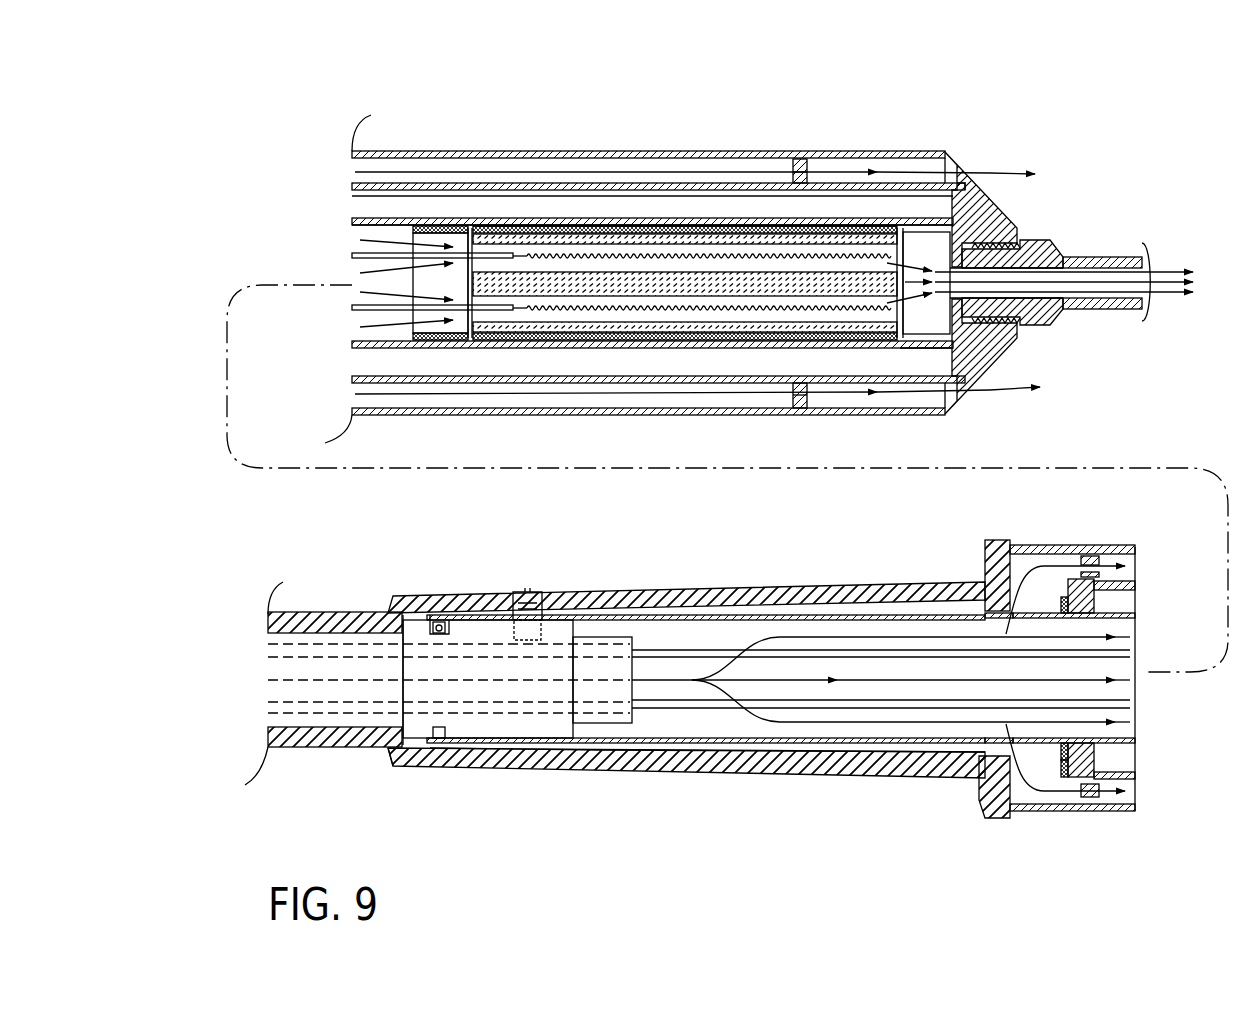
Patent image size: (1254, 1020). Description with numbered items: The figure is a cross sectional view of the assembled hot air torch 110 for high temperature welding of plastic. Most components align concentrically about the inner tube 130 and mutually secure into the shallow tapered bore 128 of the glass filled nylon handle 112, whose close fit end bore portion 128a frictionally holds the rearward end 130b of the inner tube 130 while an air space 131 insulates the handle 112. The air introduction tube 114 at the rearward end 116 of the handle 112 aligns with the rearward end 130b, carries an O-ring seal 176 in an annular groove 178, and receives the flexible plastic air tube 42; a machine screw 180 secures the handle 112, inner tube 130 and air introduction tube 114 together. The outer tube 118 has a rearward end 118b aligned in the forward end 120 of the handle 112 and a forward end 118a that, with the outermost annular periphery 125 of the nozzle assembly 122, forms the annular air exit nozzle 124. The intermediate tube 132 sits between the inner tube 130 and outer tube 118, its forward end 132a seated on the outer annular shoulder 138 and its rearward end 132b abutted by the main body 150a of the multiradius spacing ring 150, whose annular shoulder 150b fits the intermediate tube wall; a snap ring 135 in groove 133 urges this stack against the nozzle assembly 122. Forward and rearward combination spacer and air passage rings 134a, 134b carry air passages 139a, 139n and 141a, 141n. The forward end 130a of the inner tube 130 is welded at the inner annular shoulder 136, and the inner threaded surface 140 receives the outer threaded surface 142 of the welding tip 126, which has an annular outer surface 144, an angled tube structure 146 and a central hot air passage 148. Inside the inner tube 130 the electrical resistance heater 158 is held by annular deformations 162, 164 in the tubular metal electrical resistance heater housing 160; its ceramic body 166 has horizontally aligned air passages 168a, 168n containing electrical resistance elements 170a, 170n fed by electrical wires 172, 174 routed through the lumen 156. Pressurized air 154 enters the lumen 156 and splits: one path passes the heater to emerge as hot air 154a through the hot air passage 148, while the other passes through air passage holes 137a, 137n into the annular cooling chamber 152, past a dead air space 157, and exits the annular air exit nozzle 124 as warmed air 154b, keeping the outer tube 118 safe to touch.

The torch 110 is at (284, 92).
The flexible plastic air tube 42 is at (332, 610).
The handle 112 is at (815, 782).
The air introduction tube 114 is at (523, 727).
The rearward end 116 is at (422, 763).
The outer tube 118 is at (561, 148).
The forward end 118a is at (931, 153).
The rearward end 118b is at (1068, 545).
The forward end 120 is at (1015, 818).
The nozzle assembly 122 is at (1027, 128).
The annular air exit nozzle 124 is at (978, 165).
The outermost annular periphery 125 is at (1003, 198).
The welding tip 126 is at (1107, 250).
The tapered bore 128 is at (875, 748).
The close fit end bore portion 128a is at (443, 748).
The inner tube 130 is at (644, 343).
The forward end 130a is at (935, 345).
The rearward end 130b is at (449, 745).
The air space 131 is at (848, 748).
The intermediate tube 132 is at (398, 186).
The forward end 132a is at (943, 186).
The rearward end 132b is at (1133, 585).
The groove 133 is at (1072, 616).
The forward combination spacer and air passage ring 134a is at (801, 165).
The rearward combination spacer and air passage ring 134b is at (1090, 557).
The snap ring 135 is at (1061, 775).
The inner annular shoulder 136 is at (982, 232).
The air passage hole 137a is at (1011, 613).
The air passage hole 137n is at (1006, 724).
The outer annular shoulder 138 is at (1000, 207).
The air passage 139a is at (806, 180).
The air passage 139n is at (796, 412).
The inner threaded surface 140 is at (998, 320).
The air passage 141a is at (1093, 556).
The air passage 141n is at (1094, 792).
The outer threaded surface 142 is at (1044, 305).
The annular outer surface 144 is at (1041, 324).
The angled tube structure 146 is at (1137, 257).
The central hot air passage 148 is at (1120, 293).
The multiradius spacing ring 150 is at (1083, 762).
The main body 150a is at (1094, 747).
The annular shoulder 150b is at (1093, 767).
The annular cooling chamber 152 is at (473, 170).
The pressurized air 154 is at (668, 255).
The hot air 154a is at (1165, 293).
The warmed air 154b is at (1003, 390).
The lumen 156 is at (652, 722).
The dead air space 157 is at (758, 203).
The electrical resistance heater 158 is at (578, 226).
The tubular metal electrical resistance heater housing 160 is at (610, 218).
The annular deformation 162 is at (900, 235).
The annular deformation 164 is at (470, 228).
The ceramic body 166 is at (522, 328).
The horizontally aligned air passage 168a is at (647, 243).
The horizontally aligned air passage 168n is at (570, 318).
The electrical resistance element 170a is at (689, 285).
The electrical resistance element 170n is at (707, 313).
The electrical wire 172 is at (707, 653).
The electrical wire 174 is at (708, 702).
The O-ring seal 176 is at (436, 620).
The annular groove 178 is at (467, 595).
The machine screw 180 is at (541, 594).